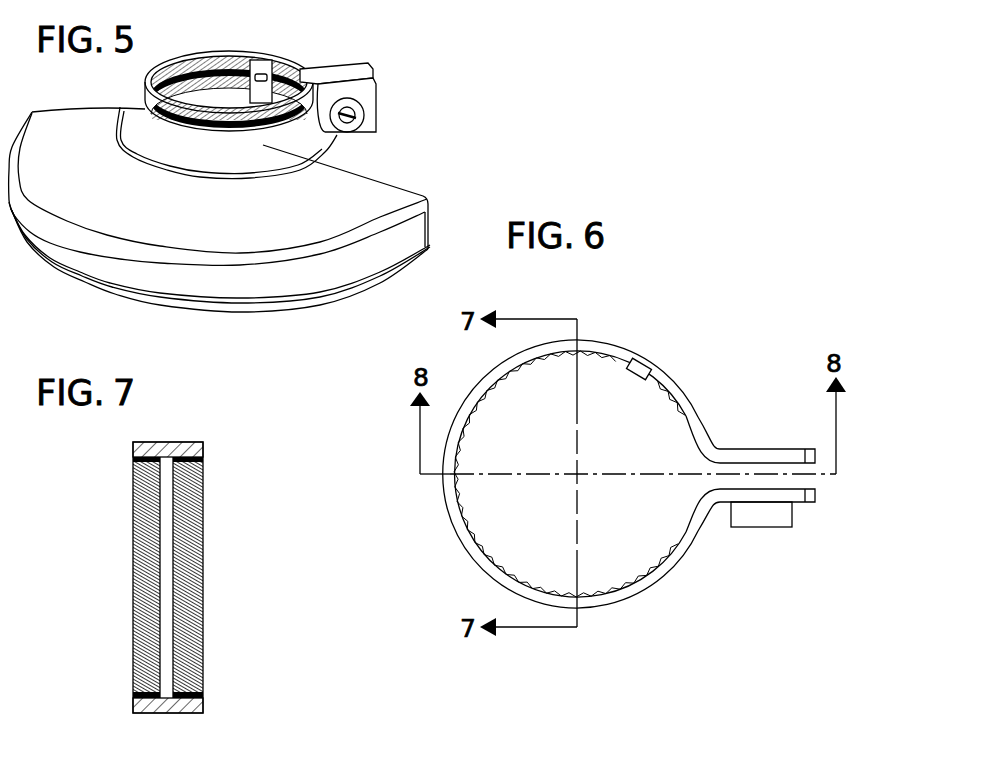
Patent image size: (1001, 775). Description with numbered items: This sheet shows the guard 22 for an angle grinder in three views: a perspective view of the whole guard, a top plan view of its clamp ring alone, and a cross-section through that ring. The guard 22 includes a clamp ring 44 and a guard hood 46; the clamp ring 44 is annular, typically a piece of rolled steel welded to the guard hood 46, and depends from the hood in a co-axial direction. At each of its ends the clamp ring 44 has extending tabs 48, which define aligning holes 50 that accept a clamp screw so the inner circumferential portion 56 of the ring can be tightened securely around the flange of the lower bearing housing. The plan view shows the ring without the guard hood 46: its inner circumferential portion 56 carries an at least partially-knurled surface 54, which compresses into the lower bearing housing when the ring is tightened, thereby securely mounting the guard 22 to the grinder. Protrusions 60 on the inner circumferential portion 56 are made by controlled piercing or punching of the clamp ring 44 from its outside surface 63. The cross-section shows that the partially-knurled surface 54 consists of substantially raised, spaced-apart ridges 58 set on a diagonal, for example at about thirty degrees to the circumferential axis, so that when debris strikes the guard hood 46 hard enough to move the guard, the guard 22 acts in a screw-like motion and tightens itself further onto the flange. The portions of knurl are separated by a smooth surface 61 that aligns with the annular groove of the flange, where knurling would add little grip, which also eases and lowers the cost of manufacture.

In FIG. 5, the guard 22 is at (253, 212).
In FIG. 5, the clamp ring 44 is at (293, 135).
In FIG. 6, the clamp ring 44 is at (619, 343).
In FIG. 5, the guard hood 46 is at (357, 192).
In FIG. 5, the extending tabs 48 is at (338, 76).
In FIG. 5, the aligning holes 50 is at (352, 118).
In FIG. 6, the partially-knurled surface 54 is at (520, 367).
In FIG. 7, the partially-knurled surface 54 is at (202, 670).
In FIG. 6, the inner circumferential portion 56 is at (522, 580).
In FIG. 7, the ridges 58 is at (202, 485).
In FIG. 6, the protrusions 60 is at (640, 373).
In FIG. 7, the smooth surface 61 is at (167, 540).
In FIG. 6, the outside surface 63 is at (629, 479).